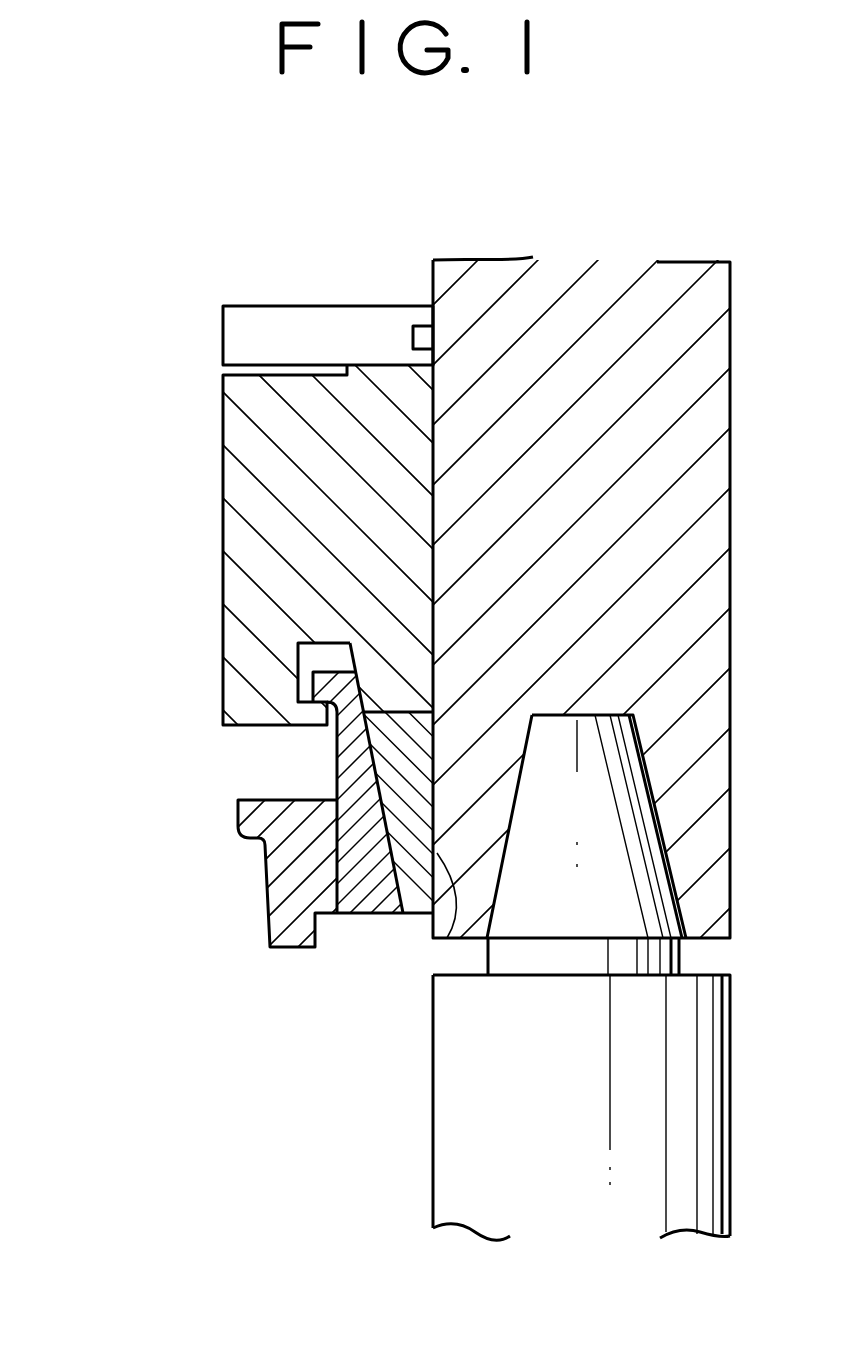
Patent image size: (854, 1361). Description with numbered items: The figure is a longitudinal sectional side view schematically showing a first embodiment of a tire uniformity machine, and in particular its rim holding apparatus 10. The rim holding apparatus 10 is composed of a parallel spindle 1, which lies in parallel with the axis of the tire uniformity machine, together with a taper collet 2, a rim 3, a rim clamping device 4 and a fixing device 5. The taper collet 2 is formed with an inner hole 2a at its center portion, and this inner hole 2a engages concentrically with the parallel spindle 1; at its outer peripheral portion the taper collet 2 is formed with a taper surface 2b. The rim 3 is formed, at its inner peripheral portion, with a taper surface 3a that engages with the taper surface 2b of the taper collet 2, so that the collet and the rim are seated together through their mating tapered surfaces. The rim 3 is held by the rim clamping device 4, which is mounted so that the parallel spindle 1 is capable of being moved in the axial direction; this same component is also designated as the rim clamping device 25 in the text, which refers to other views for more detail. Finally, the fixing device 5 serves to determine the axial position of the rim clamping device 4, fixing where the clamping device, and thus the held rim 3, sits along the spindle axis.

The parallel spindle 1 is at (712, 698).
The taper collet 2 is at (377, 757).
The inner hole 2a is at (447, 940).
The taper surface 2b is at (385, 838).
The rim 3 is at (275, 886).
The taper surface 3a is at (383, 790).
The rim clamping device 4 is at (427, 680).
The rim clamping device 25 is at (230, 528).
The fixing device 5 is at (222, 353).
The rim holding apparatus 10 is at (100, 306).